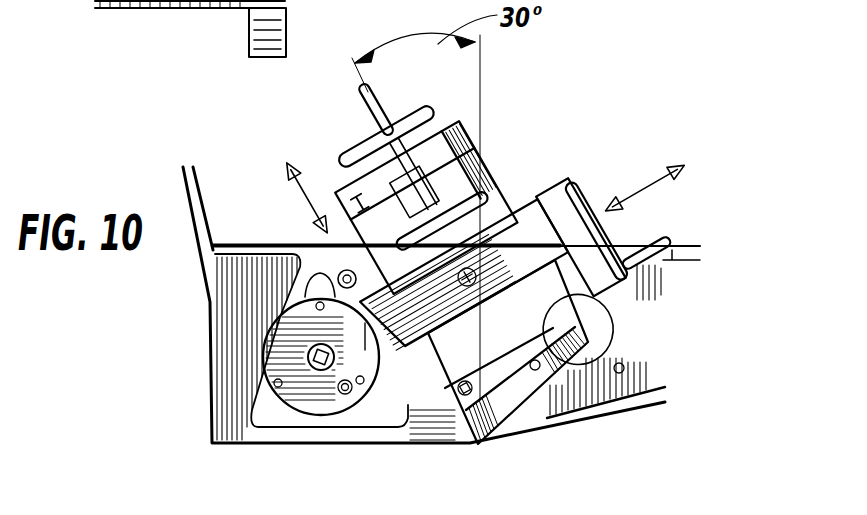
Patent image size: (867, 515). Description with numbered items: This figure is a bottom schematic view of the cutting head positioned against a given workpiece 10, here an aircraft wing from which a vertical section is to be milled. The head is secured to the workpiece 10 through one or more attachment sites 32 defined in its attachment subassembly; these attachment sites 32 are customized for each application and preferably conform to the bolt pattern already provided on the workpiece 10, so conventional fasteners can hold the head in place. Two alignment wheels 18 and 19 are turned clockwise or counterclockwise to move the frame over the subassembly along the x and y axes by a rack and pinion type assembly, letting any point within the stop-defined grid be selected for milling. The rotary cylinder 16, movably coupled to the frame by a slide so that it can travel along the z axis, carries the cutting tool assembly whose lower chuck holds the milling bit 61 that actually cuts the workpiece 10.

The workpiece 10 is at (275, 438).
The rotary cylinder 16 is at (282, 330).
The milling bit 61 is at (310, 360).
The alignment wheel 18 is at (352, 147).
The alignment wheel 19 is at (578, 185).
The attachment sites 32 is at (492, 397).